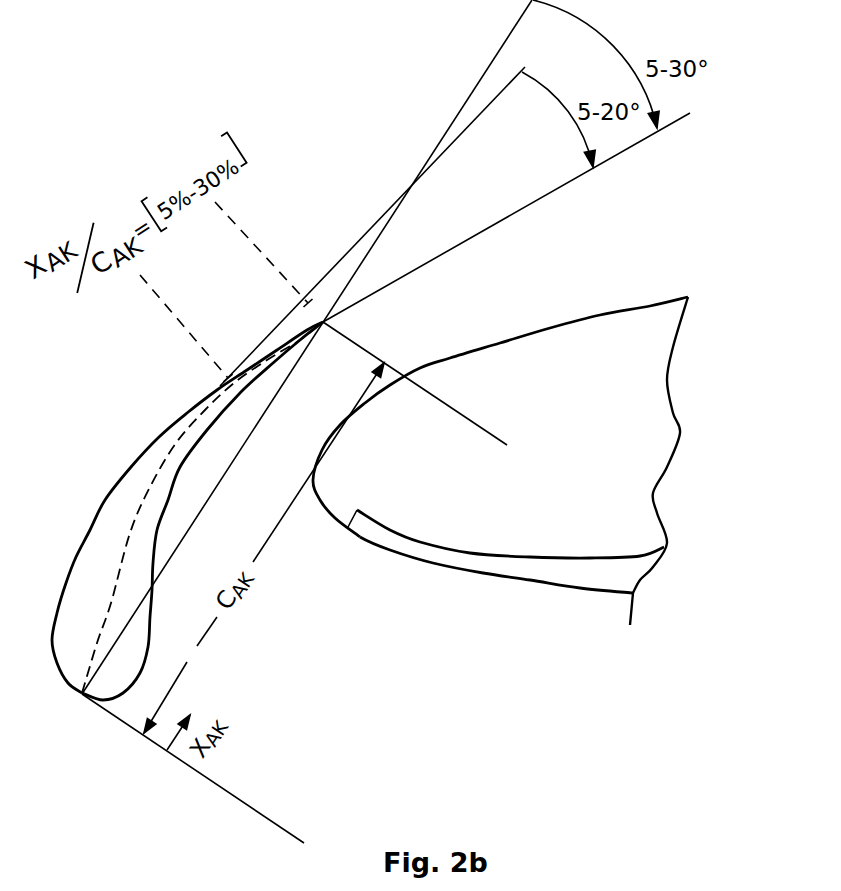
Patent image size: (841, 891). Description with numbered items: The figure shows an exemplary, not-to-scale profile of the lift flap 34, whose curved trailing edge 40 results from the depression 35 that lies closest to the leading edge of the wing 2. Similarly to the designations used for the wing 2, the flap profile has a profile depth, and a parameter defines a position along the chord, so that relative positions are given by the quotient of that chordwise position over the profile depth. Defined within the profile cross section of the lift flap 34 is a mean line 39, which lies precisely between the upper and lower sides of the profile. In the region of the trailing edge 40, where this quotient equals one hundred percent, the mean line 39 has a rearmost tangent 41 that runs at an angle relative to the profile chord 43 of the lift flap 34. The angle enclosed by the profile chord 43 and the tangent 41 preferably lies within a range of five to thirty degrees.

The wing 2 is at (647, 247).
The lift flap 34 is at (137, 467).
The depression 35 is at (457, 563).
The mean line 39 is at (112, 575).
The trailing edge 40 is at (328, 245).
The tangent 41 is at (503, 220).
The profile chord 43 is at (172, 558).